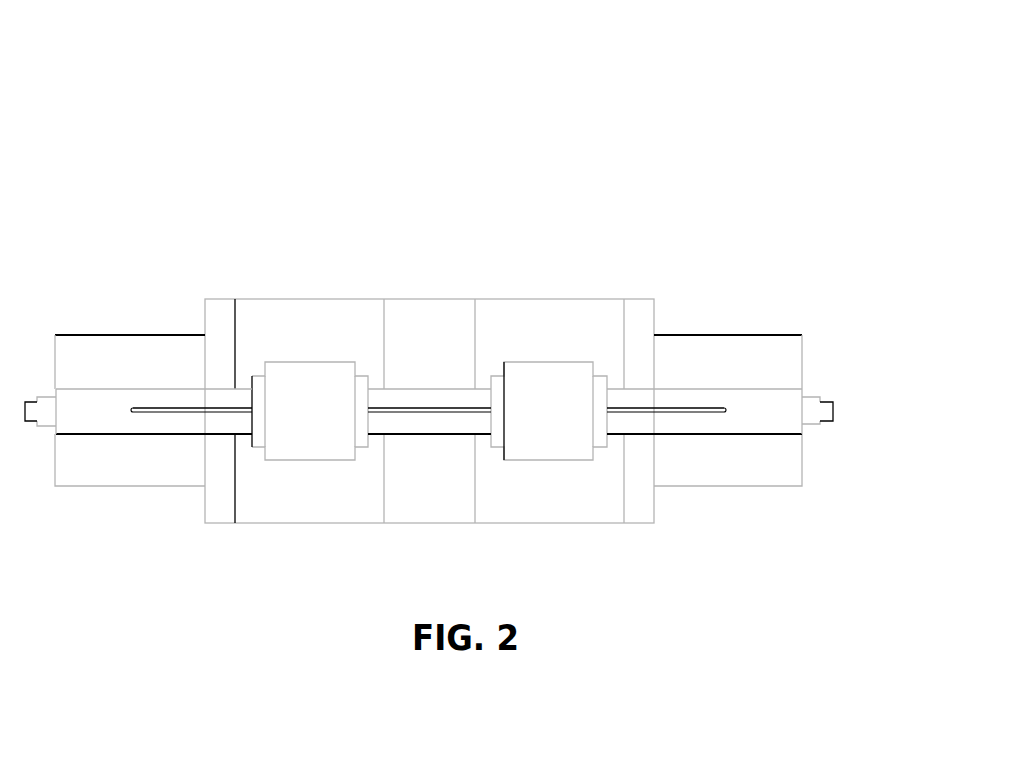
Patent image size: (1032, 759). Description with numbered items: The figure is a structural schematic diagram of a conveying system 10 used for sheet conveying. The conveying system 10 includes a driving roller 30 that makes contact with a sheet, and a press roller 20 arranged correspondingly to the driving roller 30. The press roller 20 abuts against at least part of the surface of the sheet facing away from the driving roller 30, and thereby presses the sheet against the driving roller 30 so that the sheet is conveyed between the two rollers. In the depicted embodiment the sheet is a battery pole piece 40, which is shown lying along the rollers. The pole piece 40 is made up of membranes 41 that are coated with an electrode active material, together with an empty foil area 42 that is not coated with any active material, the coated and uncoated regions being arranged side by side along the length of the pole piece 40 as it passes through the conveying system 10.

The conveying system 10 is at (757, 58).
The press roller 20 is at (740, 408).
The driving roller 30 is at (710, 358).
The pole piece 40 is at (648, 282).
The membrane 41 is at (323, 322).
The empty foil area 42 is at (423, 323).